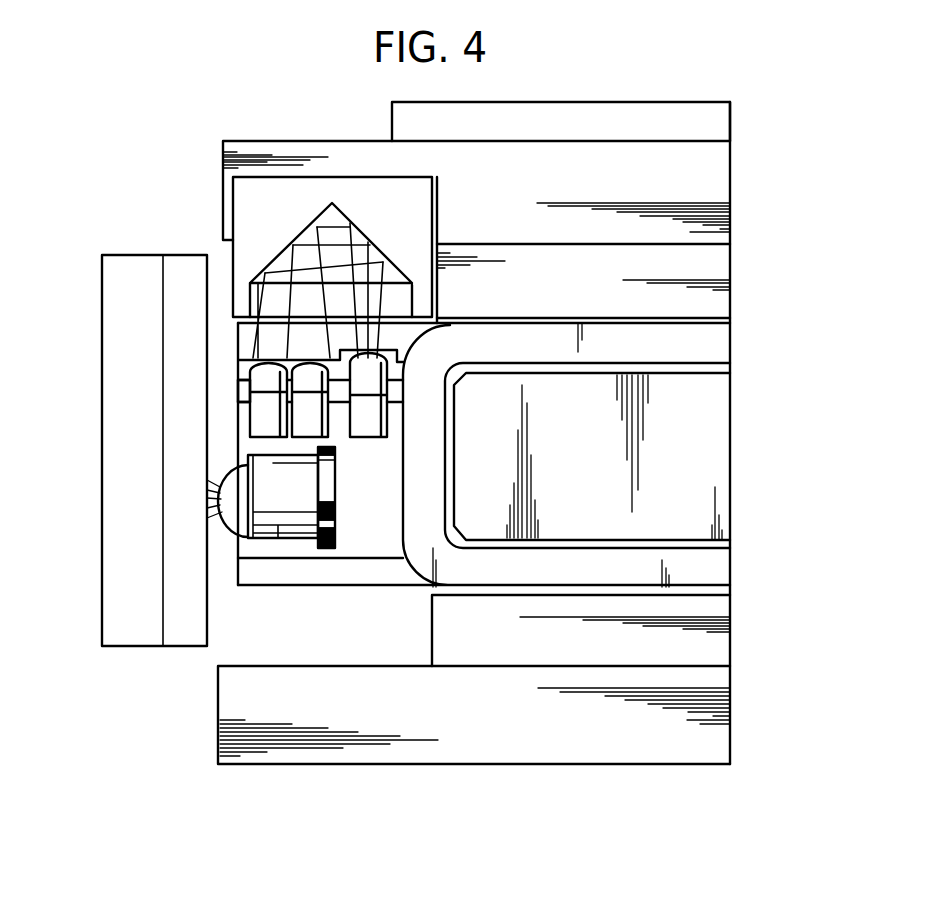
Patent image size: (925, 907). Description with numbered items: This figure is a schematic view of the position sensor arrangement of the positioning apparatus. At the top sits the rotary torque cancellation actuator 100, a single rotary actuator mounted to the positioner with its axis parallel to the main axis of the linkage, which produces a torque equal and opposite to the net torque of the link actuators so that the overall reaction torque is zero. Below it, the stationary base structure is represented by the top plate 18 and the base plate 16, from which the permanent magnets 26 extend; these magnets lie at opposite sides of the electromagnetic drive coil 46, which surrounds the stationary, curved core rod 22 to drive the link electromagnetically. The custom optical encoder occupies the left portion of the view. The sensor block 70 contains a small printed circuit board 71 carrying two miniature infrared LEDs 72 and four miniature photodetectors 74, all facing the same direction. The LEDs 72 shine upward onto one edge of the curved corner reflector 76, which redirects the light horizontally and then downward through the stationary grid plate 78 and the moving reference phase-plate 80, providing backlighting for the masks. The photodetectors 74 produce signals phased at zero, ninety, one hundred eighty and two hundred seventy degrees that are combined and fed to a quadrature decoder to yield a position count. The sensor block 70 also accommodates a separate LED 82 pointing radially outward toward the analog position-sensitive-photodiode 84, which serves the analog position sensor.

The rotary torque cancellation actuator 100 is at (718, 123).
The top plate 18 is at (707, 192).
The permanent magnets 26 is at (590, 291).
The base plate 16 is at (468, 728).
The electromagnetic drive coil 46 is at (482, 360).
The core rod 22 is at (581, 471).
The curved corner reflector 76 is at (405, 213).
The stationary grid plate 78 is at (400, 298).
The moving reference phase-plate 80 is at (267, 342).
The printed circuit board 71 is at (237, 388).
The photodetectors 74 is at (258, 420).
The infrared LEDs 72 is at (372, 417).
The sensor block 70 is at (377, 488).
The separate LED 82 is at (277, 540).
The analog position-sensitive-photodiode 84 is at (192, 633).